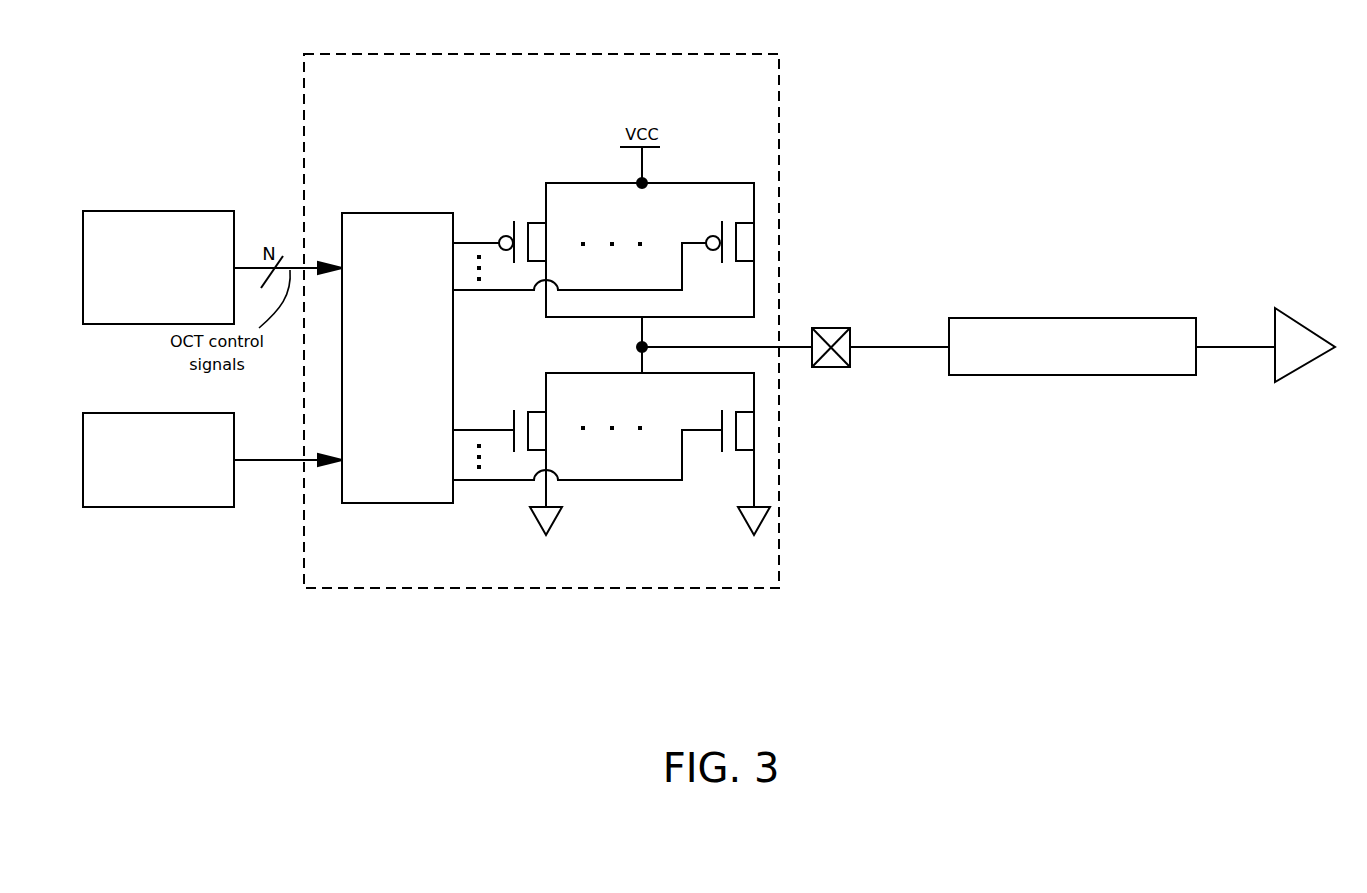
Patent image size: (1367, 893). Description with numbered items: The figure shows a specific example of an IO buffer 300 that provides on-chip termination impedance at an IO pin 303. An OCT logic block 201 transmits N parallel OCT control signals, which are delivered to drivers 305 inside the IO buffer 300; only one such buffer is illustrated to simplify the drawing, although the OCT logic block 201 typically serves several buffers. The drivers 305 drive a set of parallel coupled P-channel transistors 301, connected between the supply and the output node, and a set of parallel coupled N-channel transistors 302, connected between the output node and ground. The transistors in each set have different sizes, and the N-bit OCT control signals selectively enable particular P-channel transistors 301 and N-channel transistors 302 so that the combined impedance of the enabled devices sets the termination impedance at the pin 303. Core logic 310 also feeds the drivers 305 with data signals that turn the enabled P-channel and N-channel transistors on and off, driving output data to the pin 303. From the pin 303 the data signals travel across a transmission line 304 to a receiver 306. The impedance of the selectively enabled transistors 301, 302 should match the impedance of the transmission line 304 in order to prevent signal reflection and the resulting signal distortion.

The IO buffer 300 is at (758, 54).
The OCT logic block 201 is at (175, 211).
The core logic 310 is at (145, 507).
The drivers 305 is at (418, 213).
The P-channel transistors 301 is at (540, 219).
The N-channel transistors 302 is at (540, 411).
The IO pin 303 is at (830, 328).
The transmission line 304 is at (1075, 318).
The receiver 306 is at (1305, 325).